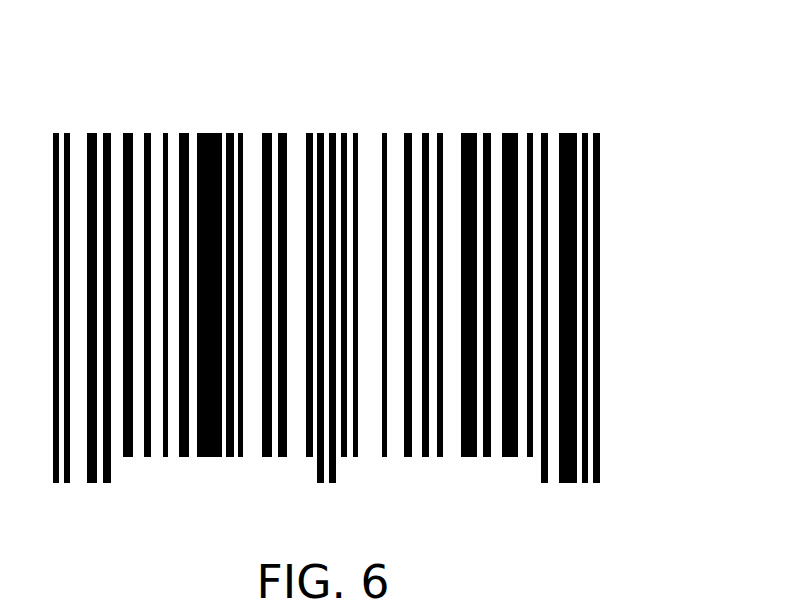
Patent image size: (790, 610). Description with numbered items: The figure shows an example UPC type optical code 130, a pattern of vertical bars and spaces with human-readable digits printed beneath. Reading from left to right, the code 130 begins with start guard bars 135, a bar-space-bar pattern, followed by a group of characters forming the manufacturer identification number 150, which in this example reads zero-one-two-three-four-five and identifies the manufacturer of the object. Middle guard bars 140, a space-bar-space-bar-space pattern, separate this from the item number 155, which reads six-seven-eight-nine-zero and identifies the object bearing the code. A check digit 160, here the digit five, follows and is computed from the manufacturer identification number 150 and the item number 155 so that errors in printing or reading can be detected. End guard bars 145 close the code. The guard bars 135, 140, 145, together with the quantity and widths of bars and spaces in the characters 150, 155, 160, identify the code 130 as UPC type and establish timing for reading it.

The UPC code 130 is at (668, 72).
The start guard bars 135 is at (73, 131).
The manufacturer identification number 150 is at (310, 131).
The middle guard bars 140 is at (340, 131).
The item number 155 is at (340, 131).
The check digit 160 is at (580, 131).
The end guard bars 145 is at (580, 131).